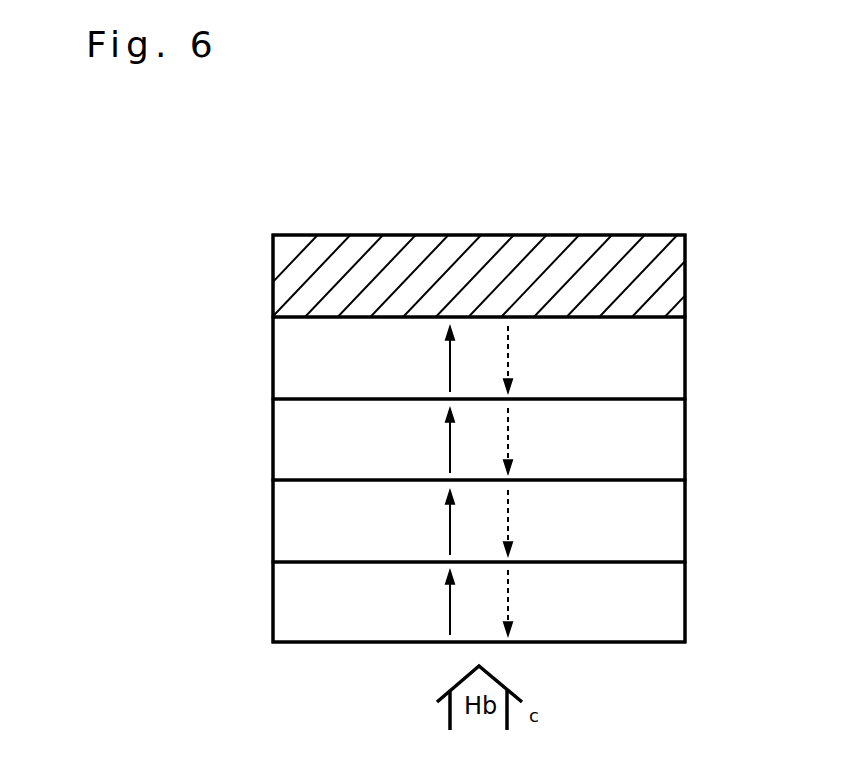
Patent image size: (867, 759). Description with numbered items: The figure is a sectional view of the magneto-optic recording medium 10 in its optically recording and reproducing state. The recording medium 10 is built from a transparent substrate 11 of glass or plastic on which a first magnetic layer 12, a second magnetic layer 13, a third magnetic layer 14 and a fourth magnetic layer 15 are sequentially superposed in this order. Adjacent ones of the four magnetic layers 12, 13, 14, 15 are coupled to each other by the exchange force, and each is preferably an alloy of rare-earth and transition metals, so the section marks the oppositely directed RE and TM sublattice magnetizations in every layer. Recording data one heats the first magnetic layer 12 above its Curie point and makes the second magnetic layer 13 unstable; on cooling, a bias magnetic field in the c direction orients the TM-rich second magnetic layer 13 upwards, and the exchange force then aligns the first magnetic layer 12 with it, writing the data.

The magneto-optic recording medium 10 is at (250, 235).
The transparent substrate 11 is at (680, 284).
The first magnetic layer 12 is at (680, 365).
The second magnetic layer 13 is at (680, 446).
The third magnetic layer 14 is at (680, 528).
The fourth magnetic layer 15 is at (680, 609).